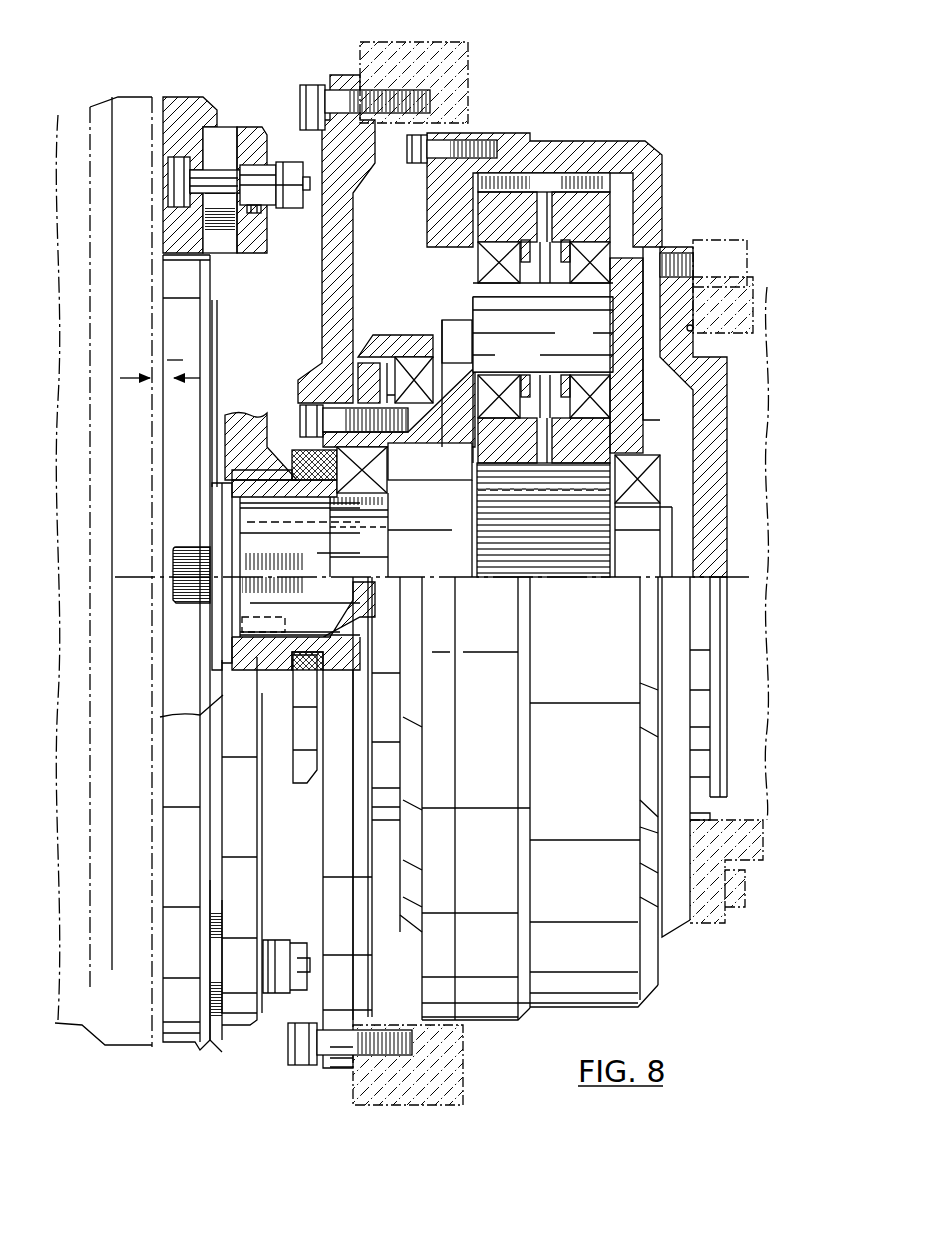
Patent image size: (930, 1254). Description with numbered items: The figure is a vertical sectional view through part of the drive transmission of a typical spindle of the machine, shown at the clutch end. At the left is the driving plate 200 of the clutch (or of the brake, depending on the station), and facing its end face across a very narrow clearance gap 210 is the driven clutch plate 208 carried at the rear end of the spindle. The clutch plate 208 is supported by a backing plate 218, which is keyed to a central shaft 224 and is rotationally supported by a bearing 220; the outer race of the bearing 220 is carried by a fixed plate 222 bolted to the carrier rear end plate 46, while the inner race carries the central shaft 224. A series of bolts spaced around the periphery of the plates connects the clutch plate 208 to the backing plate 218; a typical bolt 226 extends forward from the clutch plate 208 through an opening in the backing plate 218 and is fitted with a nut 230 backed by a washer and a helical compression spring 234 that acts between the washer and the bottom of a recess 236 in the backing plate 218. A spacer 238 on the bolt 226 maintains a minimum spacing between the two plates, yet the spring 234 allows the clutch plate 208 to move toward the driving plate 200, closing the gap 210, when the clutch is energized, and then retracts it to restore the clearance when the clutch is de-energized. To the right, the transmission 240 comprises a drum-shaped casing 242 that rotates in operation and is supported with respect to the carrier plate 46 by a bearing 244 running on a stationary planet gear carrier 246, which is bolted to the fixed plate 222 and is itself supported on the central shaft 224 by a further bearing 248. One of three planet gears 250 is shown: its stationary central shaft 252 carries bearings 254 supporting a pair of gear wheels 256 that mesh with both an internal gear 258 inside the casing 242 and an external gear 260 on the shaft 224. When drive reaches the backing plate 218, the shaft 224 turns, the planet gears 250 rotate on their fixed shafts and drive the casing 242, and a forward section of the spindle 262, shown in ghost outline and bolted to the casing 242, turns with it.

The carrier rear end plate 46 is at (464, 61).
The clutch driving plate 200 is at (133, 93).
The driven clutch plate 208 is at (183, 97).
The clearance gap 210 is at (193, 378).
The backing plate 218 is at (233, 436).
The bearing 220 is at (377, 468).
The fixed plate 222 is at (322, 304).
The central shaft 224 is at (252, 603).
The bolt 226 is at (265, 175).
The nut 230 is at (287, 200).
The helical compression spring 234 is at (250, 213).
The recess 236 is at (260, 153).
The spacer 238 is at (218, 153).
The transmission 240 is at (589, 512).
The drum-shaped casing 242 is at (655, 165).
The bearing 244 is at (426, 378).
The planet gear carrier 246 is at (477, 365).
The bearing 248 is at (663, 480).
The planet gear 250 is at (655, 256).
The central shaft 252 is at (592, 346).
The bearings 254 is at (588, 274).
The gear wheels 256 is at (510, 203).
The internal gear 258 is at (592, 283).
The external gear 260 is at (582, 508).
The forward section of the spindle 262 is at (767, 287).